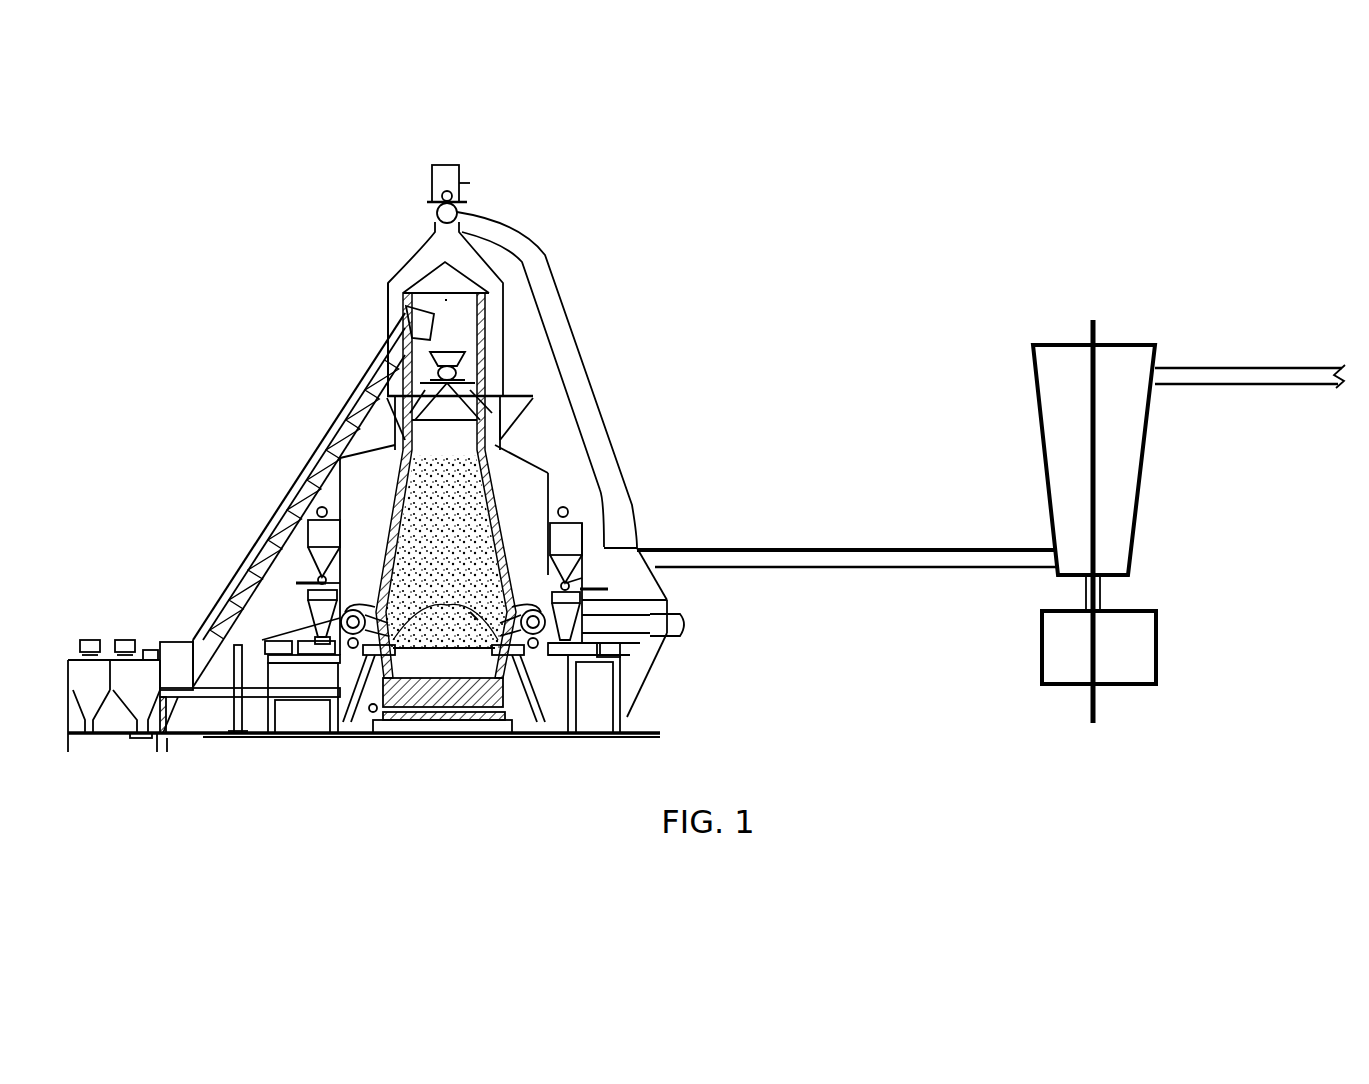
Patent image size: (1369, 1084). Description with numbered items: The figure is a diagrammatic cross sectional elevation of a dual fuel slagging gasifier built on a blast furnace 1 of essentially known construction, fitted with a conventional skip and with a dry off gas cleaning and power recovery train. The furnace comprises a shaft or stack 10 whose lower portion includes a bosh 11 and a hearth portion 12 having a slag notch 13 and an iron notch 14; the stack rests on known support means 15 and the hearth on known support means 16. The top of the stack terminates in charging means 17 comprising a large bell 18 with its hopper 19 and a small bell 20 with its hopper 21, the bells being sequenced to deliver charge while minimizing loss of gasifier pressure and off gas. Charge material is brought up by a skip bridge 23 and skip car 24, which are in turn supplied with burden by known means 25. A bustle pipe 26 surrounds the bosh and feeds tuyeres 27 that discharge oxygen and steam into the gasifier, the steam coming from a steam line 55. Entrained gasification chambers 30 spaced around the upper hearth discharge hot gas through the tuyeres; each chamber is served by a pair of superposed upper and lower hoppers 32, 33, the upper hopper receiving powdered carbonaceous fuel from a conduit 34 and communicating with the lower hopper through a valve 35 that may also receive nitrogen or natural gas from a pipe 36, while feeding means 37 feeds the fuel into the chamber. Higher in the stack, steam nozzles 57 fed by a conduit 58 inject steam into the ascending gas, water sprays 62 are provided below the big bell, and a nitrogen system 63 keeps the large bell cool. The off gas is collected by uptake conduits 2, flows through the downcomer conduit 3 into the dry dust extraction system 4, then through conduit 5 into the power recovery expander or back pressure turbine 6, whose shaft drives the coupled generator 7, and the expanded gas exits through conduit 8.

The blast furnace 1 is at (504, 428).
The gas collecting uptake conduits 2 is at (405, 273).
The downcomer conduit 3 is at (585, 393).
The dry dust extraction system 4 is at (638, 543).
The conduit 5 is at (808, 551).
The power recovery expander 6 is at (1138, 491).
The power generator 7 is at (1158, 668).
The conduit 8 is at (1232, 362).
The shaft 10 is at (498, 498).
The bosh 11 is at (470, 605).
The hearth portion 12 is at (452, 676).
The slag notch 13 is at (398, 663).
The iron notch 14 is at (490, 672).
The support means 15 is at (558, 678).
The support means 16 is at (436, 735).
The charging means 17 is at (478, 348).
The large bell 18 is at (482, 386).
The hopper 19 is at (394, 386).
The small bell 20 is at (458, 368).
The hopper 21 is at (466, 354).
The skip bridge 23 is at (300, 471).
The skip car 24 is at (404, 310).
The burden supply means 25 is at (128, 638).
The bustle pipe 26 is at (315, 618).
The tuyeres 27 is at (438, 613).
The entrained gasification chambers 30 is at (444, 688).
The upper hopper 32 is at (320, 537).
The lower hopper 33 is at (310, 601).
The conduit 34 is at (318, 511).
The valve 35 is at (338, 584).
The pipe 36 is at (312, 581).
The feeding means 37 is at (318, 660).
The steam line 55 is at (584, 631).
The steam nozzles 57 is at (552, 593).
The conduit 58 is at (583, 607).
The water sprays 62 is at (470, 426).
The nitrogen injection system 63 is at (396, 427).